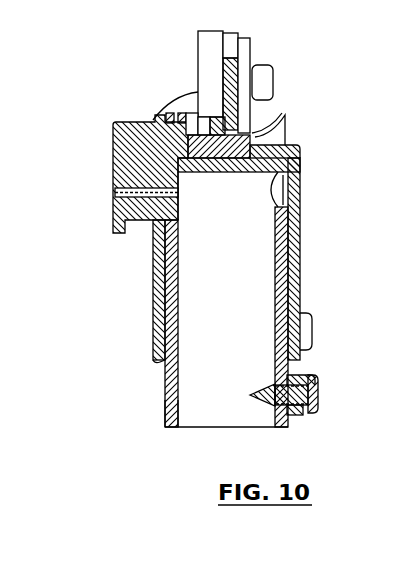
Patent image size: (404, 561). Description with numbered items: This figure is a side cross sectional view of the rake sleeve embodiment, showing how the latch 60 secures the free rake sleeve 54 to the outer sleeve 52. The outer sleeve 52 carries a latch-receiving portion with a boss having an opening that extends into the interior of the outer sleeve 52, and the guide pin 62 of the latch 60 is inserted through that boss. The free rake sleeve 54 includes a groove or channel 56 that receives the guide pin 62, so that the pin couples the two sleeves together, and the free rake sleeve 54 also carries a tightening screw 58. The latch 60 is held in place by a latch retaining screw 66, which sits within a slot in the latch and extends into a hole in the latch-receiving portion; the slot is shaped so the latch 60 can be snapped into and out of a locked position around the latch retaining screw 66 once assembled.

The outer sleeve 52 is at (153, 289).
The free rake sleeve 54 is at (165, 405).
The groove or channel 56 is at (277, 192).
The tightening screw 58 is at (310, 405).
The latch 60 is at (110, 161).
The guide pin 62 is at (173, 192).
The latch retaining screw 66 is at (180, 113).